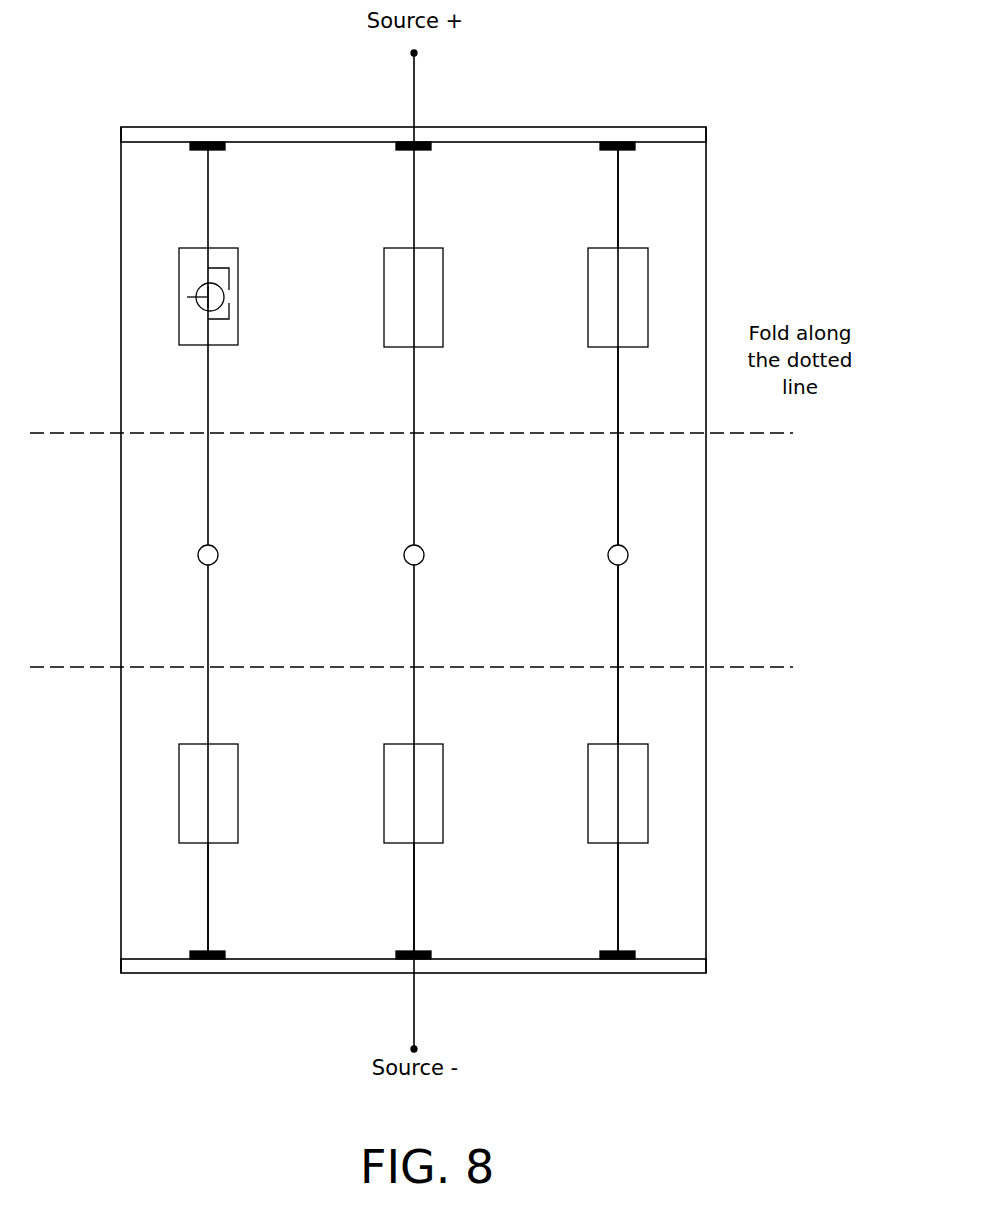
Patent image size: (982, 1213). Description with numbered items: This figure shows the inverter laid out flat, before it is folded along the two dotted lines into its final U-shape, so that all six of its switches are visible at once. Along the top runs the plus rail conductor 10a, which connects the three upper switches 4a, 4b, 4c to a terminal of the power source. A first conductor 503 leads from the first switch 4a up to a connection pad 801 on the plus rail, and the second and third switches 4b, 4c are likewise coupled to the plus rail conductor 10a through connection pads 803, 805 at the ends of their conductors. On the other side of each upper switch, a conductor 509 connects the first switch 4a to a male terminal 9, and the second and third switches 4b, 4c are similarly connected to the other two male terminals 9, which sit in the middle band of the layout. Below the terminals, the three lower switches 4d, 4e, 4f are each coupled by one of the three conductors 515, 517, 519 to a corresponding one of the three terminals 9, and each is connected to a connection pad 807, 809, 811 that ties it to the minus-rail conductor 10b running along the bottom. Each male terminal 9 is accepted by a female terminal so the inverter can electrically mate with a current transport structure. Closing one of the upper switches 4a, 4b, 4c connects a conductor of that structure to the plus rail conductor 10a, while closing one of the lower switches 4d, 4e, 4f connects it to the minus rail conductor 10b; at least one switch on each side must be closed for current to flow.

The plus rail conductor 10a is at (655, 130).
The minus-rail conductor 10b is at (158, 968).
The first switch 4a is at (600, 330).
The second switch 4b is at (430, 262).
The third switch 4c is at (238, 345).
The switch 4d is at (600, 776).
The switch 4e is at (433, 772).
The switch 4f is at (230, 764).
The male terminal 9 is at (215, 550).
The first conductor 503 is at (618, 175).
The conductor 509 is at (618, 483).
The conductor 515 is at (618, 925).
The conductor 517 is at (414, 910).
The conductor 519 is at (208, 900).
The connection pad 801 is at (608, 152).
The connection pad 803 is at (402, 152).
The connection pad 805 is at (220, 151).
The connection pad 807 is at (608, 951).
The connection pad 809 is at (400, 951).
The connection pad 811 is at (218, 950).